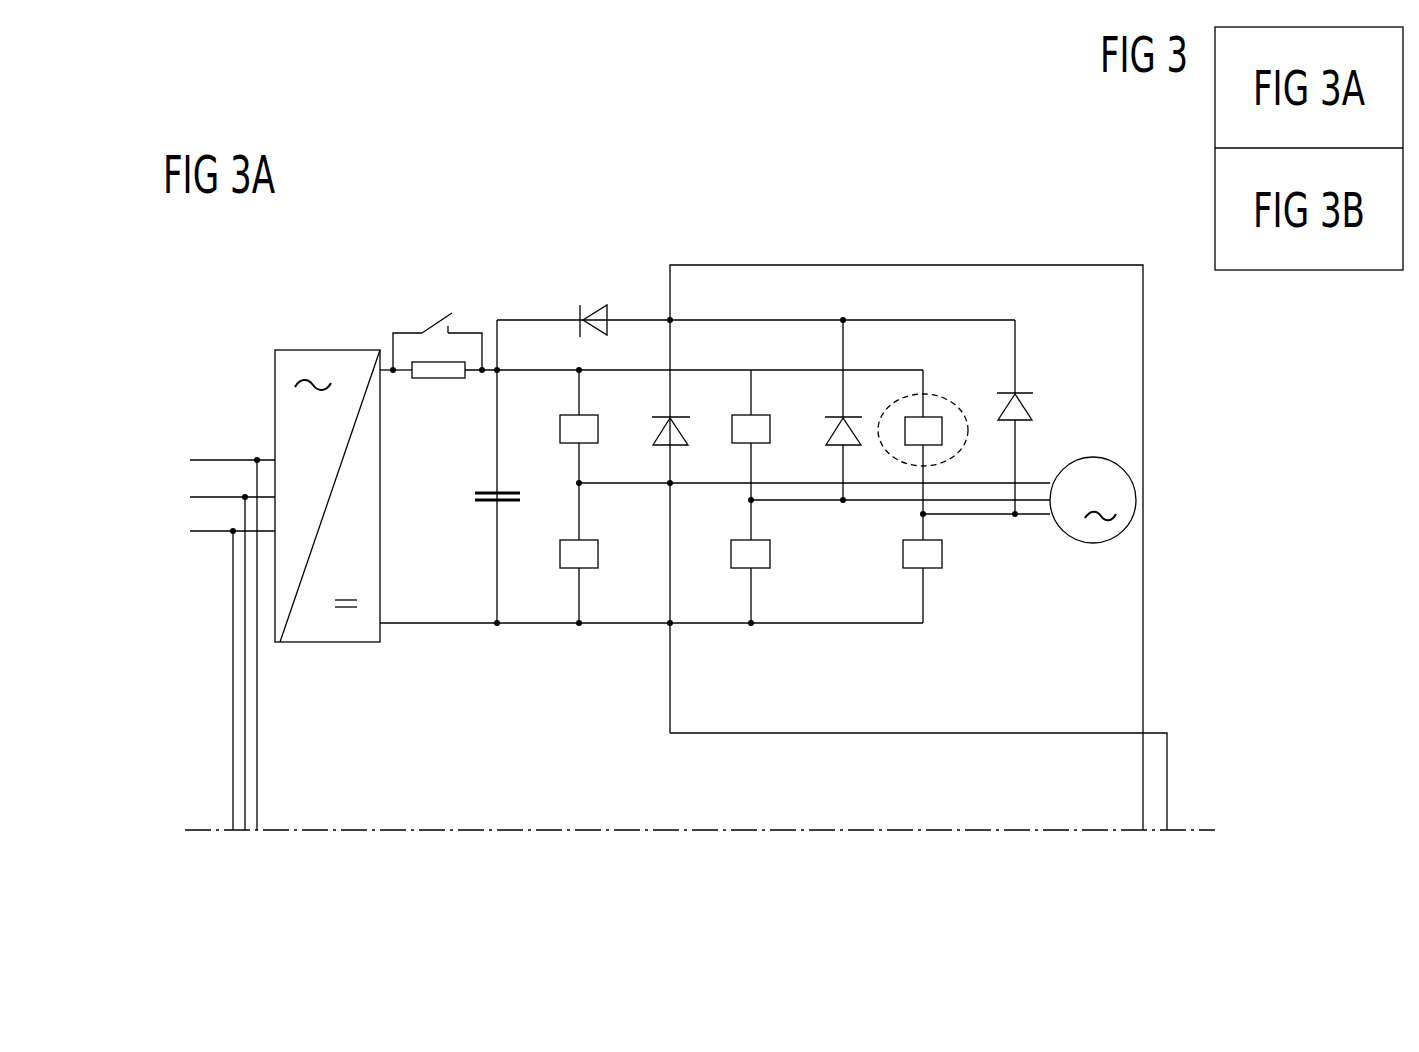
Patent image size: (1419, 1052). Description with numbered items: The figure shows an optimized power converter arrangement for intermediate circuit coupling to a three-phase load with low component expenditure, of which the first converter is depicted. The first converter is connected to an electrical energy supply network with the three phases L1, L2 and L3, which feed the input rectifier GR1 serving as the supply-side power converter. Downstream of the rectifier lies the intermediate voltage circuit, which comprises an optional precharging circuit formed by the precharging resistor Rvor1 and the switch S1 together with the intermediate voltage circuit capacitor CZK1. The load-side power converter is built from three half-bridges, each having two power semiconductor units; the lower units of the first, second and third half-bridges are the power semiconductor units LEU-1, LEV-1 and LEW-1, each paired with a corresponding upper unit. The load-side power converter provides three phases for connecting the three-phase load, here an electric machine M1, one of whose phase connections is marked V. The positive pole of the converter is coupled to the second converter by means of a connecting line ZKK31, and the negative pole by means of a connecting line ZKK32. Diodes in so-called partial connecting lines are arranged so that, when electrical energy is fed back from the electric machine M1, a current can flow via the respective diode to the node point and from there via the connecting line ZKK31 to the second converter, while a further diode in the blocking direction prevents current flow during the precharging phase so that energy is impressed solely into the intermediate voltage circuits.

The input rectifier GR1 is at (326, 350).
The switch S1 is at (437, 318).
The precharging resistor Rvor1 is at (430, 380).
The intermediate voltage circuit capacitor CZK1 is at (485, 505).
The phase L1 is at (219, 636).
The phase L2 is at (219, 654).
The phase L3 is at (219, 672).
The power semiconductor unit LEU-1 is at (585, 570).
The power semiconductor unit LEV-1 is at (755, 570).
The power semiconductor unit LEW-1 is at (925, 570).
The electric machine M1 is at (1090, 457).
The connection point V is at (968, 440).
The connecting line ZKK31 is at (897, 258).
The connecting line ZKK32 is at (899, 745).